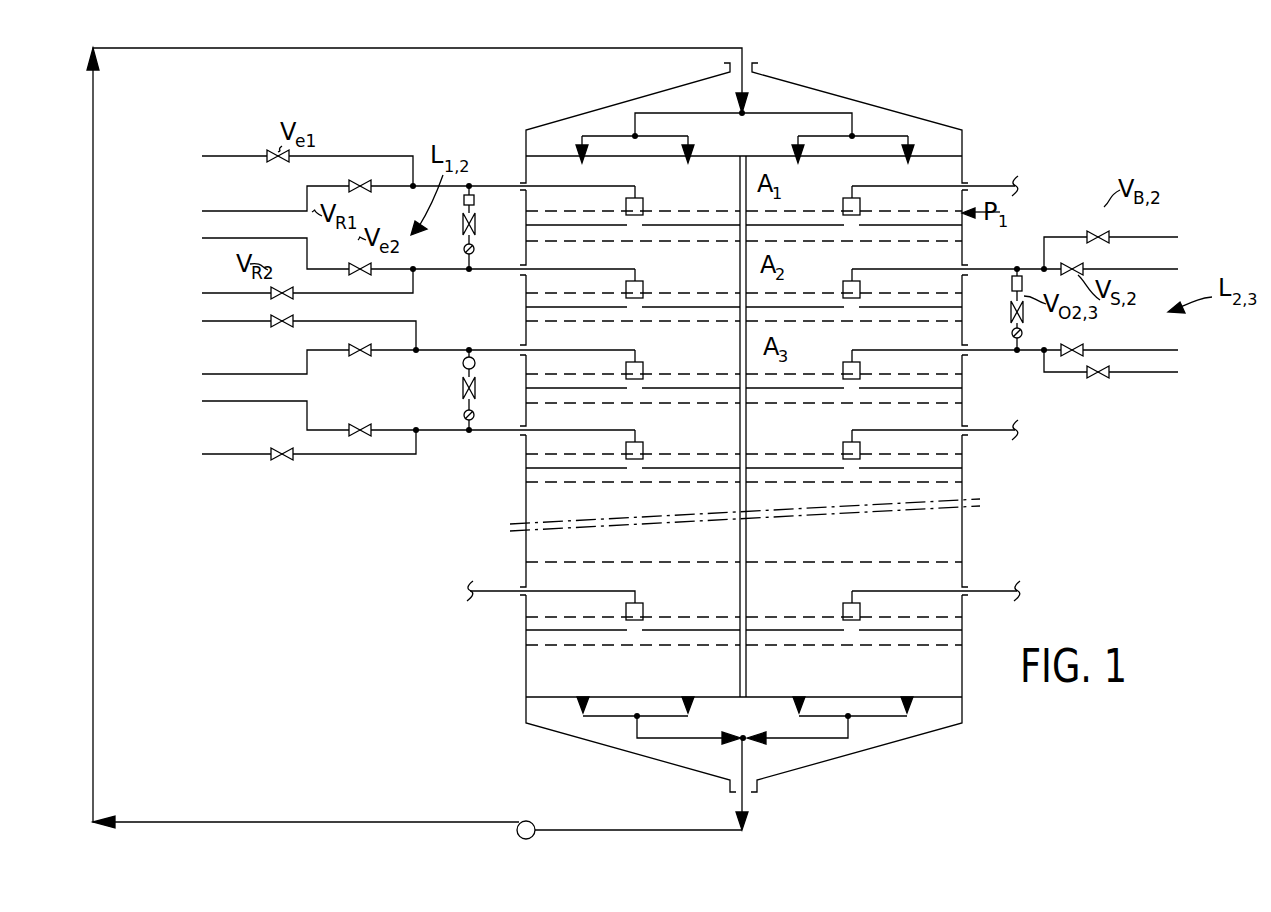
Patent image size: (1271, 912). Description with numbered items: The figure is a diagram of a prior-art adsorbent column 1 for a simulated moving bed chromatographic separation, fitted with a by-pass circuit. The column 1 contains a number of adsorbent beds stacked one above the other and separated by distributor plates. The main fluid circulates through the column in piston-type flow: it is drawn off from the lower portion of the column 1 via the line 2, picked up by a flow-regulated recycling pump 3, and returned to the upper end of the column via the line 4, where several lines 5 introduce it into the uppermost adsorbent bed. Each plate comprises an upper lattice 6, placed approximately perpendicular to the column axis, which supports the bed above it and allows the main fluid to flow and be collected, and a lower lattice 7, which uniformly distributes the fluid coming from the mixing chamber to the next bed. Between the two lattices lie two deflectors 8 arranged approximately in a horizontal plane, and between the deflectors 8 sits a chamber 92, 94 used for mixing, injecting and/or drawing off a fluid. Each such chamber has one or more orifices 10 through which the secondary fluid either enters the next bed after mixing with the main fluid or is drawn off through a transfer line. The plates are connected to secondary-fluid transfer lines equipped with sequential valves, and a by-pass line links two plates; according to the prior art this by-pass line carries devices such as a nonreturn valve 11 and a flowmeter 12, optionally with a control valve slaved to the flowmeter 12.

The column 1 is at (928, 116).
The line 2 is at (746, 801).
The recycling pump 3 is at (528, 839).
The line 4 is at (568, 48).
The lines 5 is at (853, 113).
The upper lattice 6 is at (890, 209).
The lower lattice 7 is at (874, 244).
The deflectors 8 is at (677, 227).
The orifices 10 is at (634, 461).
The nonreturn valve 11 is at (476, 248).
The flowmeter 12 is at (476, 200).
The chamber 92 is at (644, 289).
The chamber 94 is at (644, 448).